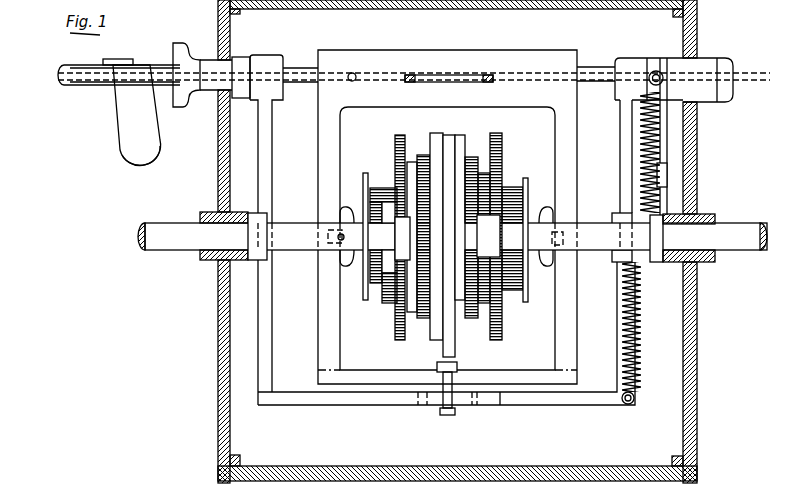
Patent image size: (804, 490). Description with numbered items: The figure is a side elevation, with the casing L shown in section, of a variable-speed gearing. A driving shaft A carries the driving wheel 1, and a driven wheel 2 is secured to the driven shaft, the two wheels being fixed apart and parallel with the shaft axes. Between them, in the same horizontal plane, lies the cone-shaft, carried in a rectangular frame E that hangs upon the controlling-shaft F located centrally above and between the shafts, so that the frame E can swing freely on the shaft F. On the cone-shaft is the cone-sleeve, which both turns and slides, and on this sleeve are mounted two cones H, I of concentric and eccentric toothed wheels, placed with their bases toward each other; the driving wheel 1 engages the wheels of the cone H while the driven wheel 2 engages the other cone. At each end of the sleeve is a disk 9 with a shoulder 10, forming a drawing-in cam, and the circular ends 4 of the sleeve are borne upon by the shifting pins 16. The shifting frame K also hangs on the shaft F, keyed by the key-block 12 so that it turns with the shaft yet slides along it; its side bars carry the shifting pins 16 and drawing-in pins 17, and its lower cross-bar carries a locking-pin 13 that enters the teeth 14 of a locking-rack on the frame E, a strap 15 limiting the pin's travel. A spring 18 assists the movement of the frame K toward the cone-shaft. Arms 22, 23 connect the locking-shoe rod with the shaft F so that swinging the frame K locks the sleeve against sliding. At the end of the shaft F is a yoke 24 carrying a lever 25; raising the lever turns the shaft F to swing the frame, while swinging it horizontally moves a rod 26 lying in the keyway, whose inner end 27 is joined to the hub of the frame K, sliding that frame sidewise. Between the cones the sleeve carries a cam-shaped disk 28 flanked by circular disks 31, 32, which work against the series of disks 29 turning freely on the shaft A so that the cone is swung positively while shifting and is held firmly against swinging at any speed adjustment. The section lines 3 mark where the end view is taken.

The driving wheel 1 is at (395, 152).
The driven wheel 2 is at (58, 77).
The bearing cap / section line 3 is at (646, 443).
The circular end of the cone-sleeve 4 is at (553, 218).
The disk 9 is at (369, 229).
The shoulder 10 is at (528, 285).
The key-block 12 is at (470, 70).
The locking-pin 13 is at (447, 412).
The teeth of the locking-rack 14 is at (419, 408).
The strap 15 is at (477, 406).
The shifting pin 16 is at (338, 242).
The drawing-in pin 17 is at (342, 243).
The spring 18 is at (628, 309).
The arm 22 is at (656, 198).
The arm 23 is at (667, 161).
The yoke 24 is at (100, 59).
The lever 25 is at (115, 120).
The rod 26 is at (297, 77).
The inner end of rod 27 is at (355, 74).
The cam-shaped disk 28 is at (455, 130).
The series of disks 29 is at (447, 237).
The circular disk 31 is at (431, 135).
The circular disk 32 is at (467, 135).
The driving shaft A is at (193, 245).
The rectangular frame E is at (292, 427).
The controlling-shaft F is at (312, 86).
The cone H is at (390, 322).
The cone I is at (522, 179).
The shifting frame K is at (603, 155).
The casing L is at (218, 353).